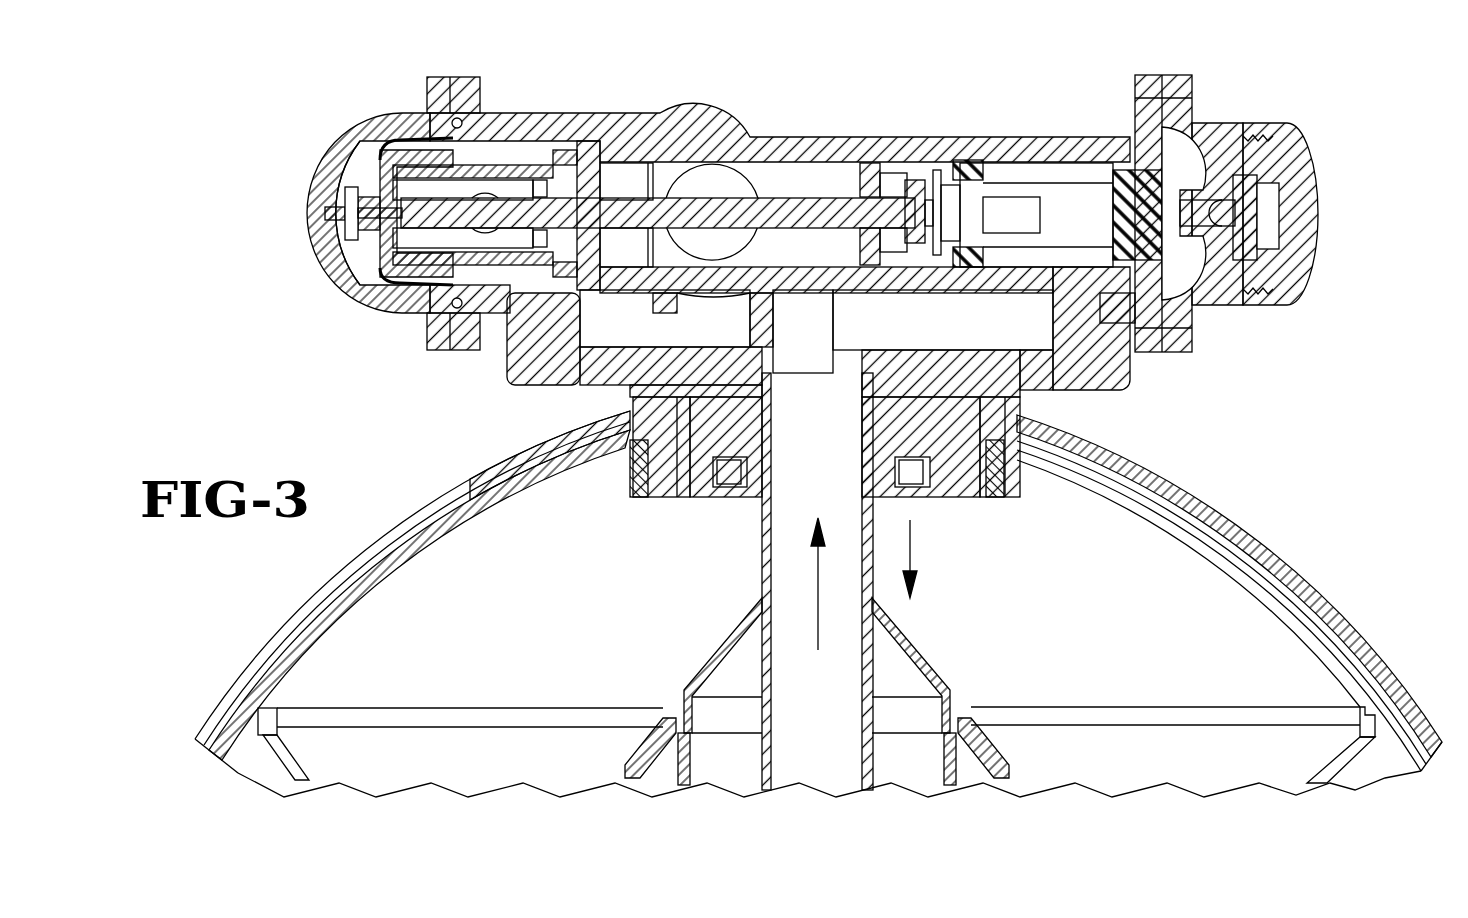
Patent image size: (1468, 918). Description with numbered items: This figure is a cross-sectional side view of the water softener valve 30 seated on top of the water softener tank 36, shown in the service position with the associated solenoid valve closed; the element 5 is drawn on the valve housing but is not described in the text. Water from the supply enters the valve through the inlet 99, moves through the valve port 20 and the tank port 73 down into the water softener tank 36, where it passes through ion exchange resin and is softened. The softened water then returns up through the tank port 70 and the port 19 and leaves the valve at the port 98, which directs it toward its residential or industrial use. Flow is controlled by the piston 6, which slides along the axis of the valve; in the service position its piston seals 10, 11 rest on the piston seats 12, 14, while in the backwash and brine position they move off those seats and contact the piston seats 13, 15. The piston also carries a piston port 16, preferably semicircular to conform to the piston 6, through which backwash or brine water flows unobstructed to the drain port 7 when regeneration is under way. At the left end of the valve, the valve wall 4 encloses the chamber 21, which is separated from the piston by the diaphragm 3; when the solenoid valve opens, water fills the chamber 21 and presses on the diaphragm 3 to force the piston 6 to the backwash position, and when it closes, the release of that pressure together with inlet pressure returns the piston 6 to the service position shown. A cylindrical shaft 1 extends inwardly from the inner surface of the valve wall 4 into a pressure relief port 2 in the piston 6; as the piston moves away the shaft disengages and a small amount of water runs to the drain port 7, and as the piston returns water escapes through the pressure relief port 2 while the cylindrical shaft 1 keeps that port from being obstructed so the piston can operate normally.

The cylindrical shaft 1 is at (330, 215).
The pressure relief port 2 is at (383, 213).
The diaphragm 3 is at (367, 257).
The valve wall 4 is at (320, 165).
The housing flange 5 is at (550, 112).
The piston 6 is at (777, 207).
The drain port 7 is at (487, 193).
The piston seal 10 is at (587, 147).
The piston seal 11 is at (903, 247).
The piston seat 12 is at (570, 263).
The piston seat 13 is at (630, 160).
The piston seat 14 is at (900, 170).
The piston seat 15 is at (953, 172).
The piston port 16 is at (533, 237).
The port 19 is at (993, 332).
The valve port 20 is at (600, 332).
The chamber 21 is at (360, 257).
The water softener valve 30 is at (1060, 135).
The water softener tank 36 is at (468, 772).
The tank port 70 is at (797, 467).
The tank port 73 is at (732, 502).
The port 98 is at (933, 173).
The inlet 99 is at (697, 187).